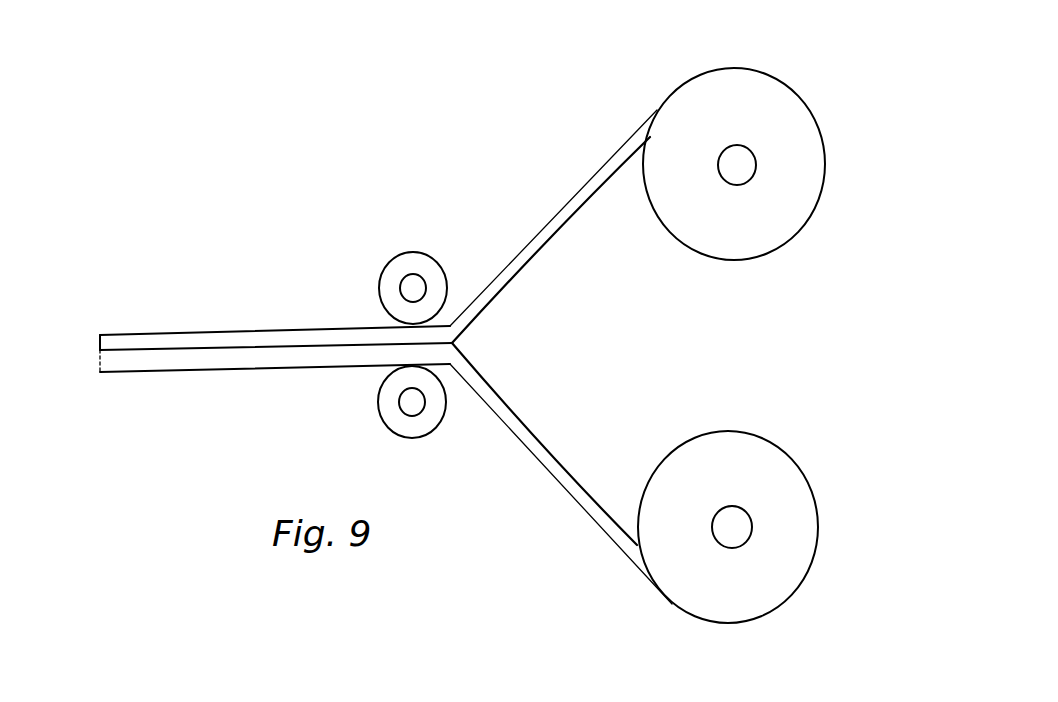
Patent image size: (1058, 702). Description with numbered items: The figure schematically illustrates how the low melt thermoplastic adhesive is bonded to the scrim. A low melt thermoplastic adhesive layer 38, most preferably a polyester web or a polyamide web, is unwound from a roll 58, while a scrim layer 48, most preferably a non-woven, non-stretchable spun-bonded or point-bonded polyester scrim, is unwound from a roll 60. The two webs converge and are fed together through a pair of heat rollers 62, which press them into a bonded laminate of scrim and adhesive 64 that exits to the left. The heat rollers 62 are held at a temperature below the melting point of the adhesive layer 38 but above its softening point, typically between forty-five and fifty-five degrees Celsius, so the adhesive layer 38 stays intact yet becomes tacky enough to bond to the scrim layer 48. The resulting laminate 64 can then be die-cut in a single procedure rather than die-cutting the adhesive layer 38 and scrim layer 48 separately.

The low melt thermoplastic adhesive layer 38 is at (563, 220).
The scrim layer 48 is at (545, 453).
The roll 58 is at (782, 103).
The roll 60 is at (783, 477).
The heat rollers 62 is at (427, 265).
The bonded laminate of scrim and adhesive 64 is at (100, 350).